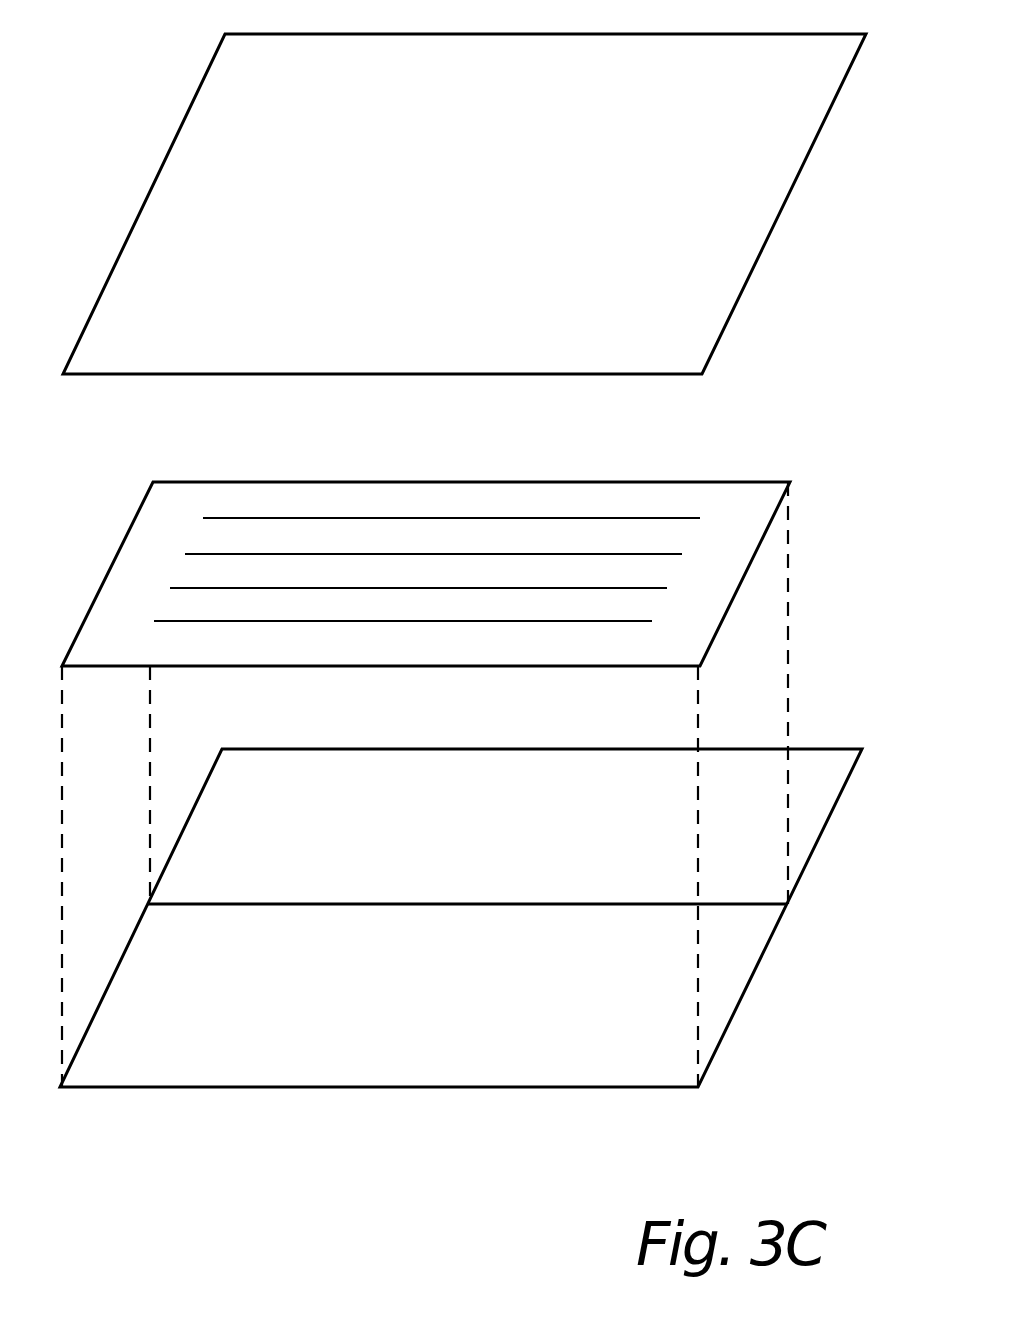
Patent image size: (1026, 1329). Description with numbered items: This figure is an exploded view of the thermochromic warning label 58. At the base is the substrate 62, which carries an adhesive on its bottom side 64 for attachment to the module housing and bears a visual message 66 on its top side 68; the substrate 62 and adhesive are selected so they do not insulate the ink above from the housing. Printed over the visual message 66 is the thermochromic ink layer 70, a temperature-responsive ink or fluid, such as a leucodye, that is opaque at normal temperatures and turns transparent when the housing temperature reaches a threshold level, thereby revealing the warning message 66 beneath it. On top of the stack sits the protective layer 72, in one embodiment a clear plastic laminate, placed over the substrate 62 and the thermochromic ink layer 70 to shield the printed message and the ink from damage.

The warning label 58 is at (118, 99).
The protective layer 72 is at (752, 138).
The thermochromic ink layer 70 is at (695, 505).
The top side 68 is at (737, 950).
The substrate 62 is at (805, 808).
The bottom side 64 is at (748, 1027).
The visual message 66 is at (207, 1074).